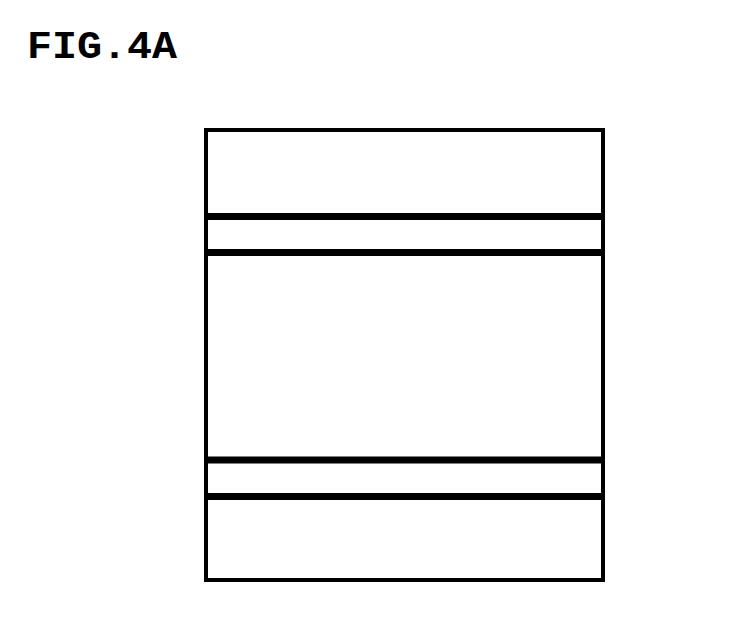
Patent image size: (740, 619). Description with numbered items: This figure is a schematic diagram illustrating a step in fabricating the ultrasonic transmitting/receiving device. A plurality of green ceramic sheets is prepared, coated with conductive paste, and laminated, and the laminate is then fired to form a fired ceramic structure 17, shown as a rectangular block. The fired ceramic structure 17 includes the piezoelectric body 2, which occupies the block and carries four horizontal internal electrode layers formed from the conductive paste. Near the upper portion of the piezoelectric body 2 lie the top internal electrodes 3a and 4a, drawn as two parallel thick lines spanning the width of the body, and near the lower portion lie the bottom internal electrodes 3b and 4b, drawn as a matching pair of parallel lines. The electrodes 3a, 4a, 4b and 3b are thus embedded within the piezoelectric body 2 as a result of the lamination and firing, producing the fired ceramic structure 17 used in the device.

The fired ceramic structure 17 is at (202, 189).
The piezoelectric body 2 is at (225, 341).
The top internal electrode 3a is at (560, 211).
The top internal electrode 4a is at (560, 256).
The bottom internal electrode 4b is at (560, 457).
The bottom internal electrode 3b is at (560, 500).